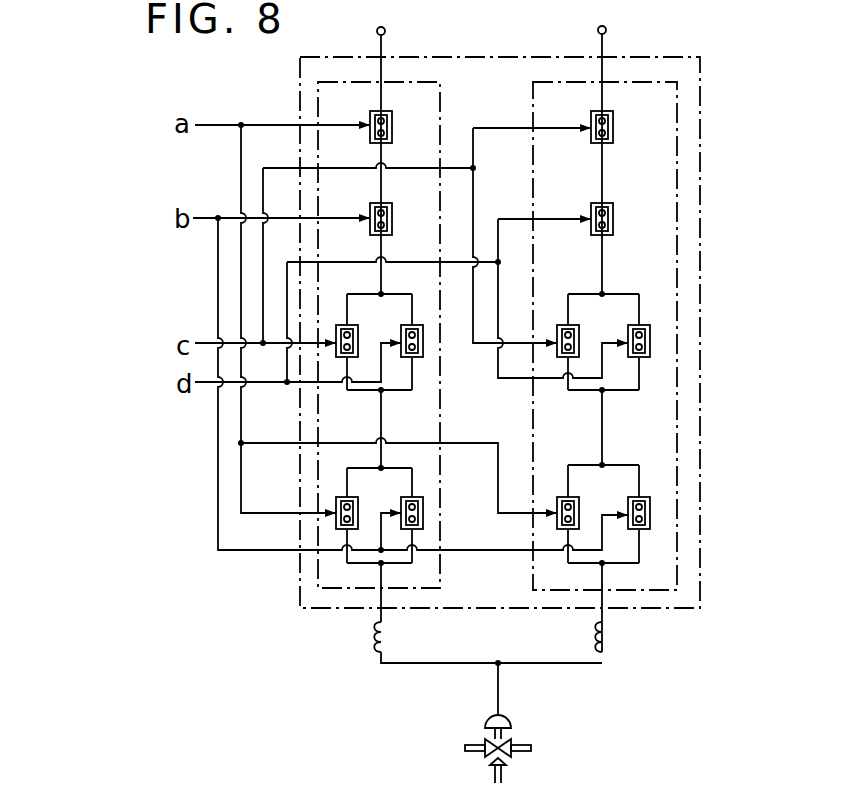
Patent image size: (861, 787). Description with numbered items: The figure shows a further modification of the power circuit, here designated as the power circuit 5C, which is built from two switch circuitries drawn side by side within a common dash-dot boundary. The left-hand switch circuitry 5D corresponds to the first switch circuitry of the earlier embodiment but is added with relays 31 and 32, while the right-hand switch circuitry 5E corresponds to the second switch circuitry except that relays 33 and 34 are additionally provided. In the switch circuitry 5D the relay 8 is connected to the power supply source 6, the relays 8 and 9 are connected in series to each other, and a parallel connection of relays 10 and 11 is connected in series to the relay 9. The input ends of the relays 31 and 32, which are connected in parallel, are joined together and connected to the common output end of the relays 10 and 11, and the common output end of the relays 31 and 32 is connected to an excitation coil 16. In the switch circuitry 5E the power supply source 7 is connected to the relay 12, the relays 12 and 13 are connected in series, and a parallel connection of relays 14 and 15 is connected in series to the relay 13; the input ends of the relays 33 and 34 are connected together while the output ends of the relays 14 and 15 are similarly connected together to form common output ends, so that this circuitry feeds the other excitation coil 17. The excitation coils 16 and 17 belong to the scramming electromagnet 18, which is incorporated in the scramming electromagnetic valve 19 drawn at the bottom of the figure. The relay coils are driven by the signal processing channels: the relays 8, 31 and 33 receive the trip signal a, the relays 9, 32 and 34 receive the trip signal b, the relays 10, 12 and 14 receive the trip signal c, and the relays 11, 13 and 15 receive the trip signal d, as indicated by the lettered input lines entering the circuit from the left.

The power circuit 5C is at (688, 53).
The switch circuitry 5D is at (441, 119).
The switch circuitry 5E is at (678, 118).
The power supply source 6 is at (385, 30).
The power supply source 7 is at (606, 29).
The relay 8 is at (392, 126).
The relay 9 is at (392, 228).
The relay 10 is at (337, 328).
The relay 11 is at (424, 330).
The relay 12 is at (613, 130).
The relay 13 is at (613, 220).
The relay 14 is at (557, 330).
The relay 15 is at (650, 335).
The excitation coil 16 is at (386, 633).
The excitation coil 17 is at (607, 633).
The scramming electromagnet 18 is at (510, 723).
The scramming electromagnetic valve 19 is at (508, 766).
The relay 31 is at (338, 500).
The relay 32 is at (423, 510).
The relay 33 is at (560, 497).
The relay 34 is at (651, 505).